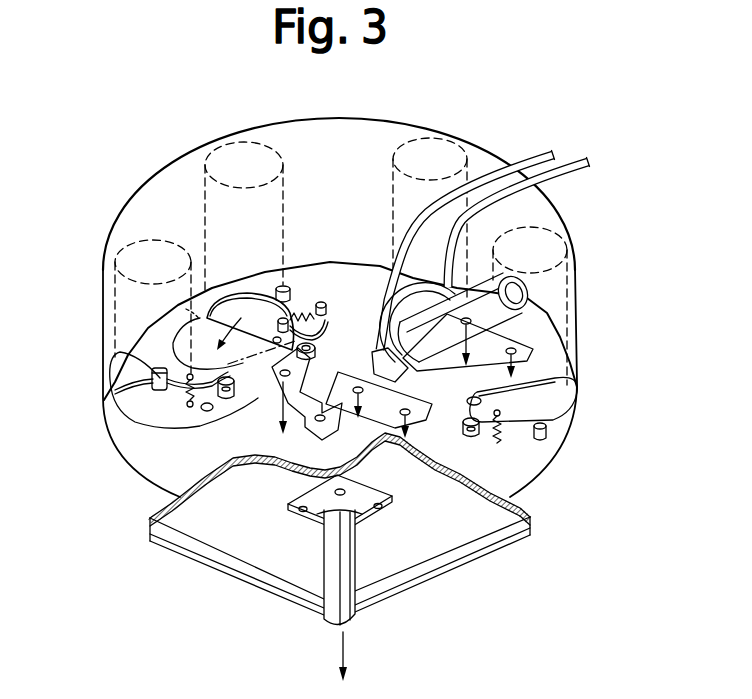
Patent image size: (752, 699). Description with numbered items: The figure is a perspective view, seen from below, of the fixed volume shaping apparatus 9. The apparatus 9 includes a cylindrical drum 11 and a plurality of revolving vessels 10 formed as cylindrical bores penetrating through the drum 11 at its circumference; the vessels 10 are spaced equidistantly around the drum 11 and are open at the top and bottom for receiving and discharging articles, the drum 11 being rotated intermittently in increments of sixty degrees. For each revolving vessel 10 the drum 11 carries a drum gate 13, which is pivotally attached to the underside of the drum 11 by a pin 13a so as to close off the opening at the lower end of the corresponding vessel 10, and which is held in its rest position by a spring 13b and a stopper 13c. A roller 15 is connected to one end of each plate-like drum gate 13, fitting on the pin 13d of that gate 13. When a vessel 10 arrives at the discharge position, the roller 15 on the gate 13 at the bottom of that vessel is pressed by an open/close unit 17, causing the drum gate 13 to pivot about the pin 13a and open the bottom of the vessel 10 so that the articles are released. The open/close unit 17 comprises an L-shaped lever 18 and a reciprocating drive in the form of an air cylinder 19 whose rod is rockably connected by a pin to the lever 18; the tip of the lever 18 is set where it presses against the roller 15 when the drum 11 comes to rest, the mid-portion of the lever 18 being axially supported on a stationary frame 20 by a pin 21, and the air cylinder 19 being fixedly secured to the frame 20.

The fixed volume shaping apparatus 9 is at (614, 195).
The revolving vessel 10 is at (245, 143).
The cylindrical drum 11 is at (128, 457).
The drum gate 13 is at (237, 290).
The pin 13a is at (207, 411).
The spring 13b is at (190, 405).
The stopper 13c is at (107, 350).
The pin 13d is at (230, 400).
The roller 15 is at (240, 368).
The open/close unit 17 is at (545, 335).
The L-shaped lever 18 is at (295, 433).
The air cylinder 19 is at (530, 295).
The stationary frame 20 is at (321, 524).
The pin 21 is at (305, 360).